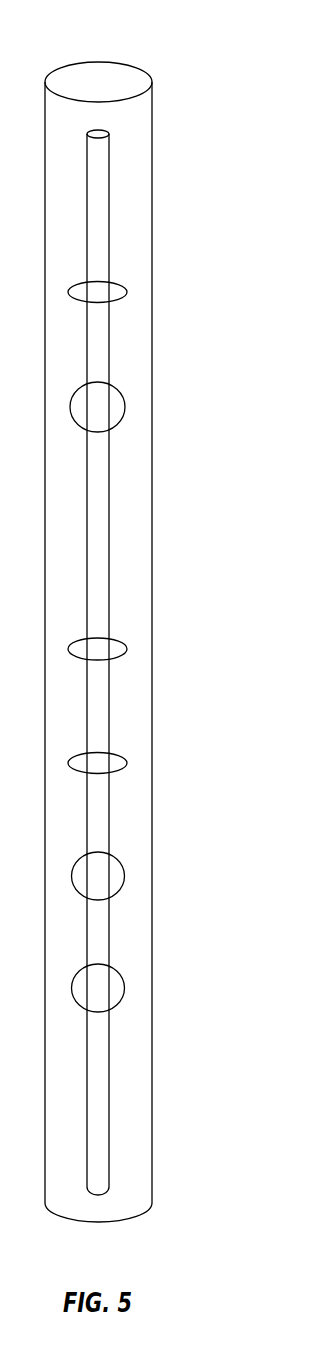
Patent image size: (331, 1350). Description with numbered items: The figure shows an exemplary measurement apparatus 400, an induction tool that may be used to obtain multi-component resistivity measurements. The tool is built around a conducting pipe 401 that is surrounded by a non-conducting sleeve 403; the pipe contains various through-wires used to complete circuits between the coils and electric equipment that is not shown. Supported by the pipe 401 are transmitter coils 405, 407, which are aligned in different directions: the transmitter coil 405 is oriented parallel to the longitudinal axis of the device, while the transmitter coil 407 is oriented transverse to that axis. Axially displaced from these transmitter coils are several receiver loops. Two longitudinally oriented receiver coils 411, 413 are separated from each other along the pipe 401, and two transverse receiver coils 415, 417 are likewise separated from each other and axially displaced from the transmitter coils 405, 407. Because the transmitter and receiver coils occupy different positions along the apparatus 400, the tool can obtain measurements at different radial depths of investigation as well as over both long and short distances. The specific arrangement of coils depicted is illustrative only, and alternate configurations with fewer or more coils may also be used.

The measurement apparatus 400 is at (168, 42).
The conducting pipe 401 is at (108, 202).
The non-conducting sleeve 403 is at (152, 137).
The transmitter coil 405 is at (127, 292).
The transmitter coil 407 is at (125, 407).
The longitudinally oriented receiver coil 411 is at (127, 649).
The longitudinally oriented receiver coil 413 is at (127, 760).
The transverse receiver coil 415 is at (125, 872).
The transverse receiver coil 417 is at (125, 985).